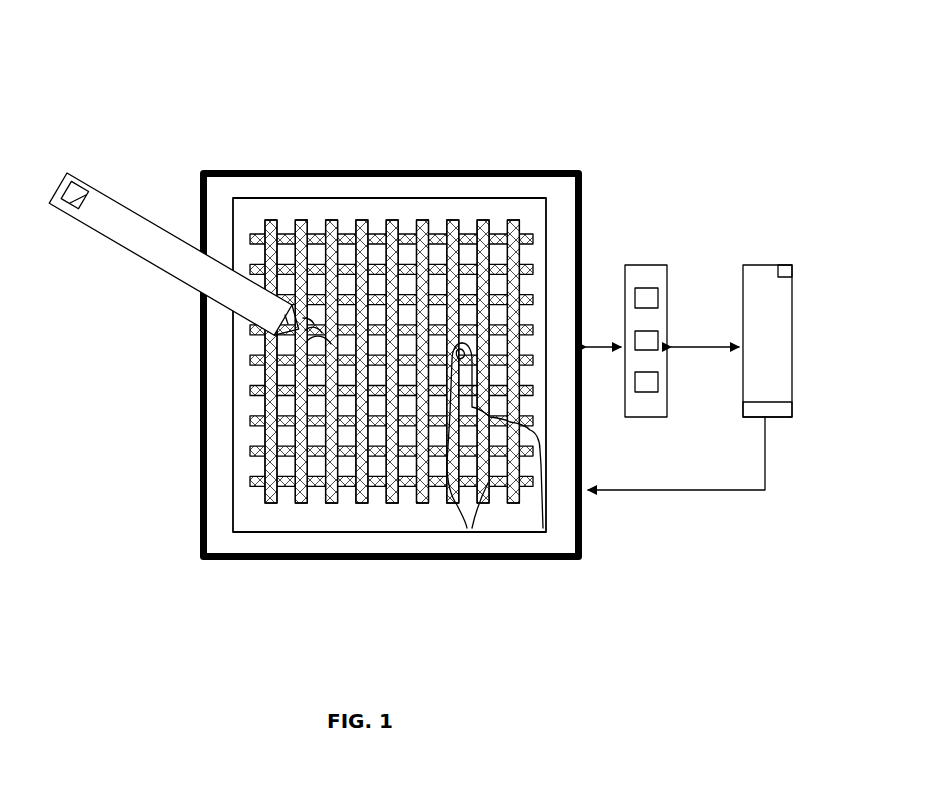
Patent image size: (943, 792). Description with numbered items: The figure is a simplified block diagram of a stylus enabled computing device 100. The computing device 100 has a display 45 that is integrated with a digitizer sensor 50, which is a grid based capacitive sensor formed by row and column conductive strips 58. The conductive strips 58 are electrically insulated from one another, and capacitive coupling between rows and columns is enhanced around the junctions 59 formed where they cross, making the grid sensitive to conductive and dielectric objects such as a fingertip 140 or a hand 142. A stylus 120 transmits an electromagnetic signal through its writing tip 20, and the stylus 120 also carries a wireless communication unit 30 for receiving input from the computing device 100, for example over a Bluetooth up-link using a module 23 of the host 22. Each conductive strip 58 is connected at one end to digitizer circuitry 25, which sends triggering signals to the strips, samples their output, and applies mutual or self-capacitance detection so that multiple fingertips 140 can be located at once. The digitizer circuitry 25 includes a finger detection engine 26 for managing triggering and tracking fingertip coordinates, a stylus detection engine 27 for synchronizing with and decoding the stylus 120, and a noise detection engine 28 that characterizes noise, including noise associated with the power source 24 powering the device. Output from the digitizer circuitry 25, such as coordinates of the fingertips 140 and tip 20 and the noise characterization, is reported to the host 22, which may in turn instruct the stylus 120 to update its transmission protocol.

The computing device 100 is at (390, 90).
The stylus 120 is at (165, 249).
The wireless communication unit 30 is at (84, 200).
The tip 20 is at (295, 342).
The conductive strips 58 is at (452, 220).
The junctions 59 is at (327, 357).
The display 45 is at (508, 172).
The digitizer sensor 50 is at (548, 245).
The digitizer circuitry 25 is at (675, 304).
The finger detection engine 26 is at (658, 300).
The stylus detection engine 27 is at (658, 340).
The noise detection engine 28 is at (658, 382).
The host 22 is at (716, 342).
The module 23 is at (792, 280).
The power source 24 is at (780, 402).
The fingertip 140 is at (459, 352).
The hand 142 is at (464, 495).